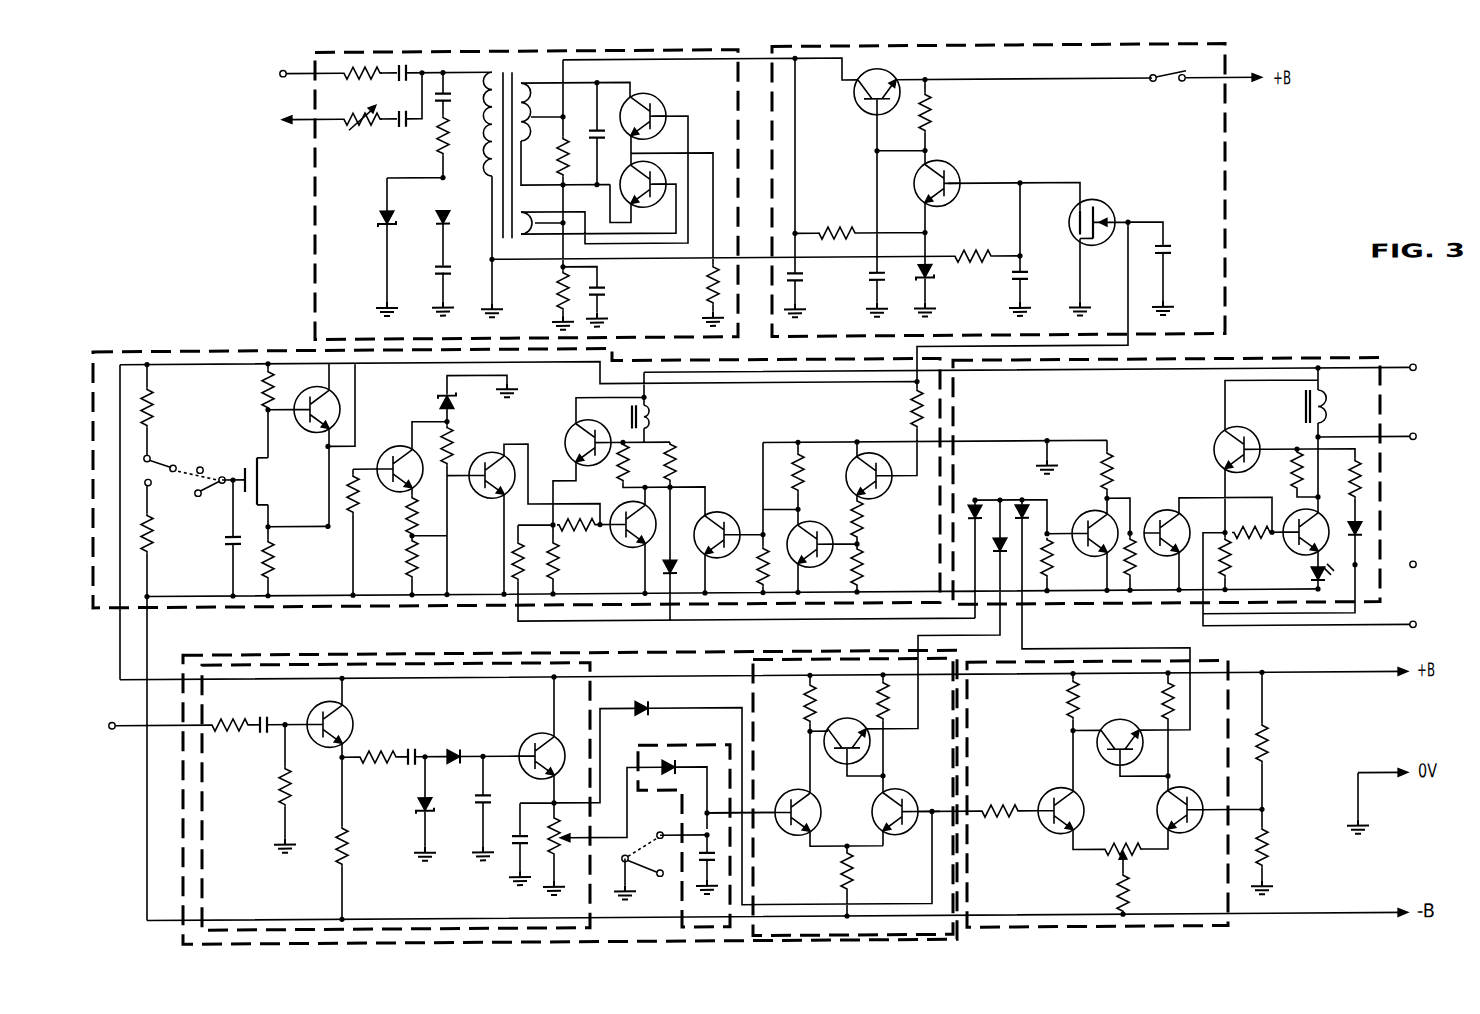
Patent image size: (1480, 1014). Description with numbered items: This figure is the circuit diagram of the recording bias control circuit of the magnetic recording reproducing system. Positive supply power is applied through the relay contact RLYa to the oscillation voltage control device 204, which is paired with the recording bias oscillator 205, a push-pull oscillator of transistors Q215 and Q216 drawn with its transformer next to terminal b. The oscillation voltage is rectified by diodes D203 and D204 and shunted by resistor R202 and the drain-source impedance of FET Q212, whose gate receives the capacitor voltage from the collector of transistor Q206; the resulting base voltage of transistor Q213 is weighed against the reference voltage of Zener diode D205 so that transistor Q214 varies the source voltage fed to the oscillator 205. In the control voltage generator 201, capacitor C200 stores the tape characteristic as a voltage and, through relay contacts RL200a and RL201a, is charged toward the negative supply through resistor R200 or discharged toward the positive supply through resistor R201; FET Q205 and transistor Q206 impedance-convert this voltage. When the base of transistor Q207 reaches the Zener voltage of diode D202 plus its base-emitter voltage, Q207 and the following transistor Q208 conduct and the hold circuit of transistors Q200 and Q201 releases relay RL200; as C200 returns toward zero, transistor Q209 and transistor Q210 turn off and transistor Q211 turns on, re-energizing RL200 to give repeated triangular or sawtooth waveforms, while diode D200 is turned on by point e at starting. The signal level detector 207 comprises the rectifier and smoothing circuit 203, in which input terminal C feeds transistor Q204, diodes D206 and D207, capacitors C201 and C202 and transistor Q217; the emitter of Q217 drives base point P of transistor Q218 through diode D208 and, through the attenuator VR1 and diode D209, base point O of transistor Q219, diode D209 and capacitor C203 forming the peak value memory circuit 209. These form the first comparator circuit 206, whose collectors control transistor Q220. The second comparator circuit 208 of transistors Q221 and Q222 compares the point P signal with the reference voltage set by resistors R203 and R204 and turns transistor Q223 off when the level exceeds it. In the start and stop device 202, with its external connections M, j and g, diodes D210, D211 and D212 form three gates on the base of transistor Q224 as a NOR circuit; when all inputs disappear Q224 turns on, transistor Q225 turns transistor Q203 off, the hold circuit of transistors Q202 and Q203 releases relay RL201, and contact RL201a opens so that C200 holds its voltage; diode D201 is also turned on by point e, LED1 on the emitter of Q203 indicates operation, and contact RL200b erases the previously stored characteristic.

The control voltage generator 201 is at (191, 350).
The start and stop device 202 is at (1283, 360).
The rectifier and smoothing circuit 203 is at (312, 663).
The oscillation voltage control device 204 is at (1225, 180).
The recording bias oscillator 205 is at (314, 270).
The first comparator circuit 206 is at (813, 660).
The signal level detector 207 is at (397, 663).
The second comparator circuit 208 is at (1228, 668).
The peak value memory circuit 209 is at (678, 746).
The transistor Q200 is at (568, 433).
The transistor Q201 is at (612, 537).
The transistor Q202 is at (1214, 442).
The transistor Q203 is at (1291, 511).
The transistor Q204 is at (354, 719).
The FET Q205 is at (273, 478).
The transistor Q206 is at (343, 404).
The transistor Q207 is at (404, 445).
The transistor Q208 is at (478, 505).
The transistor Q209 is at (875, 498).
The transistor Q210 is at (797, 517).
The transistor Q211 is at (728, 556).
The FET Q212 is at (1109, 210).
The transistor Q213 is at (960, 174).
The transistor Q214 is at (858, 109).
The transistor Q215 is at (657, 102).
The transistor Q216 is at (647, 208).
The transistor Q217 is at (540, 733).
The transistor Q218 is at (872, 799).
The transistor Q219 is at (819, 825).
The transistor Q220 is at (862, 720).
The transistor Q221 is at (1084, 812).
The transistor Q222 is at (1159, 820).
The transistor Q223 is at (1138, 721).
The transistor Q224 is at (1100, 556).
The transistor Q225 is at (1152, 514).
The diode D200 is at (662, 567).
The diode D201 is at (1365, 530).
The Zener diode D202 is at (456, 402).
The diode D203 is at (450, 220).
The diode D204 is at (382, 226).
The Zener diode D205 is at (938, 285).
The diode D206 is at (420, 809).
The diode D207 is at (454, 747).
The diode D208 is at (650, 706).
The diode D209 is at (656, 757).
The diode D210 is at (967, 500).
The diode D211 is at (1003, 538).
The diode D212 is at (1031, 514).
The luminous diode LED1 is at (1310, 578).
The resistor R200 is at (156, 545).
The resistor R201 is at (158, 395).
The resistor R202 is at (959, 252).
The resistor R203 is at (1274, 752).
The resistor R204 is at (1274, 846).
The attenuator VR1 is at (574, 831).
The capacitor C200 is at (227, 538).
The capacitor C201 is at (483, 806).
The capacitor C202 is at (518, 830).
The capacitor C203 is at (717, 856).
The relay RL200 is at (652, 416).
The relay RL201 is at (1322, 408).
The relay contact RL200a is at (158, 455).
The relay contact RL201a is at (212, 508).
The relay contact RL200b is at (664, 877).
The relay contact RLYa is at (1170, 84).
The terminal b is at (274, 73).
The input terminal C is at (106, 726).
The terminal M is at (1422, 366).
The terminal j is at (1420, 435).
The point e is at (1421, 563).
The terminal g is at (1421, 624).
The base point O is at (776, 812).
The base point P is at (922, 818).